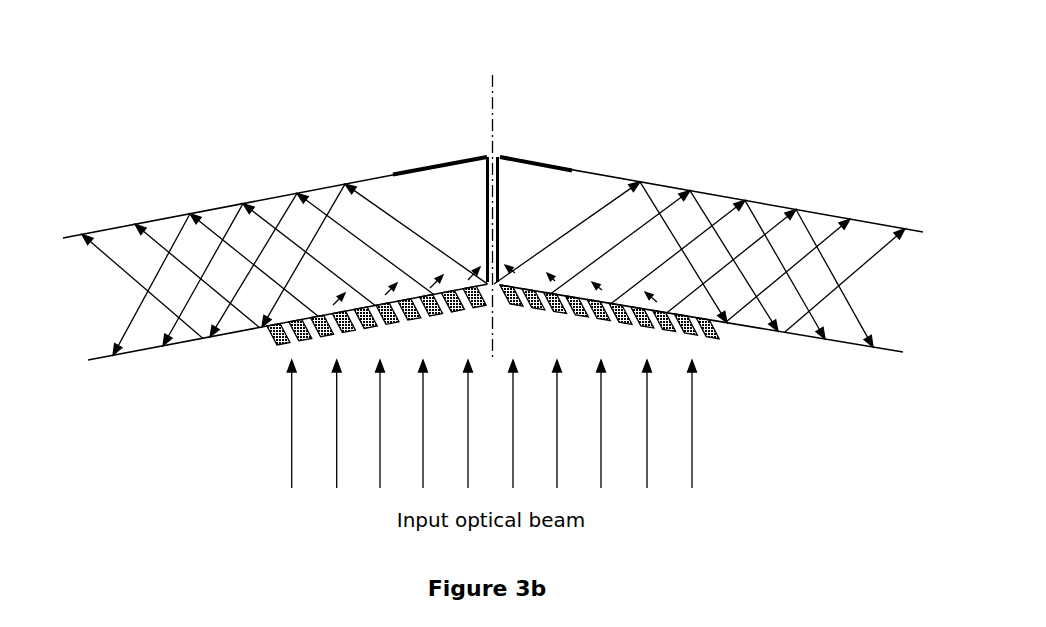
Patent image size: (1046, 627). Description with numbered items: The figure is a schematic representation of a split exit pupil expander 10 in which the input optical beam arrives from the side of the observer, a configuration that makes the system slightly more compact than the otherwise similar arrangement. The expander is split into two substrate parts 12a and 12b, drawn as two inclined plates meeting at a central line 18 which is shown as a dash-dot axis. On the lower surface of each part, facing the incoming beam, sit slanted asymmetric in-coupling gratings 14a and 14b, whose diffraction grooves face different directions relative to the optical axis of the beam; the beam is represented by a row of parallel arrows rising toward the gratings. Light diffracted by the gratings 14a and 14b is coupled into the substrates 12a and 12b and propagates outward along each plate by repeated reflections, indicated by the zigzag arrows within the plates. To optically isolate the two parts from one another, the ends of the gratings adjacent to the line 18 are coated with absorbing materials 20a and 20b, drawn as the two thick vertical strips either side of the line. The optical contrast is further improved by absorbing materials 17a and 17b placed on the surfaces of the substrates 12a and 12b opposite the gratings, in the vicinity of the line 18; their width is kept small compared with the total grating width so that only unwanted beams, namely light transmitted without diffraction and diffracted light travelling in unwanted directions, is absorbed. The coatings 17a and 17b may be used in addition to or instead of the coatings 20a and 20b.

The split exit pupil expander 10 is at (695, 140).
The split substrate 12a is at (170, 213).
The split substrate 12b is at (717, 193).
The slanted asymmetric in-coupling grating 14a is at (280, 345).
The slanted asymmetric in-coupling grating 14b is at (716, 335).
The absorbing material 17a is at (422, 166).
The absorbing material 17b is at (556, 163).
The line 18 is at (492, 132).
The absorbing material 20a is at (485, 188).
The absorbing material 20b is at (499, 203).